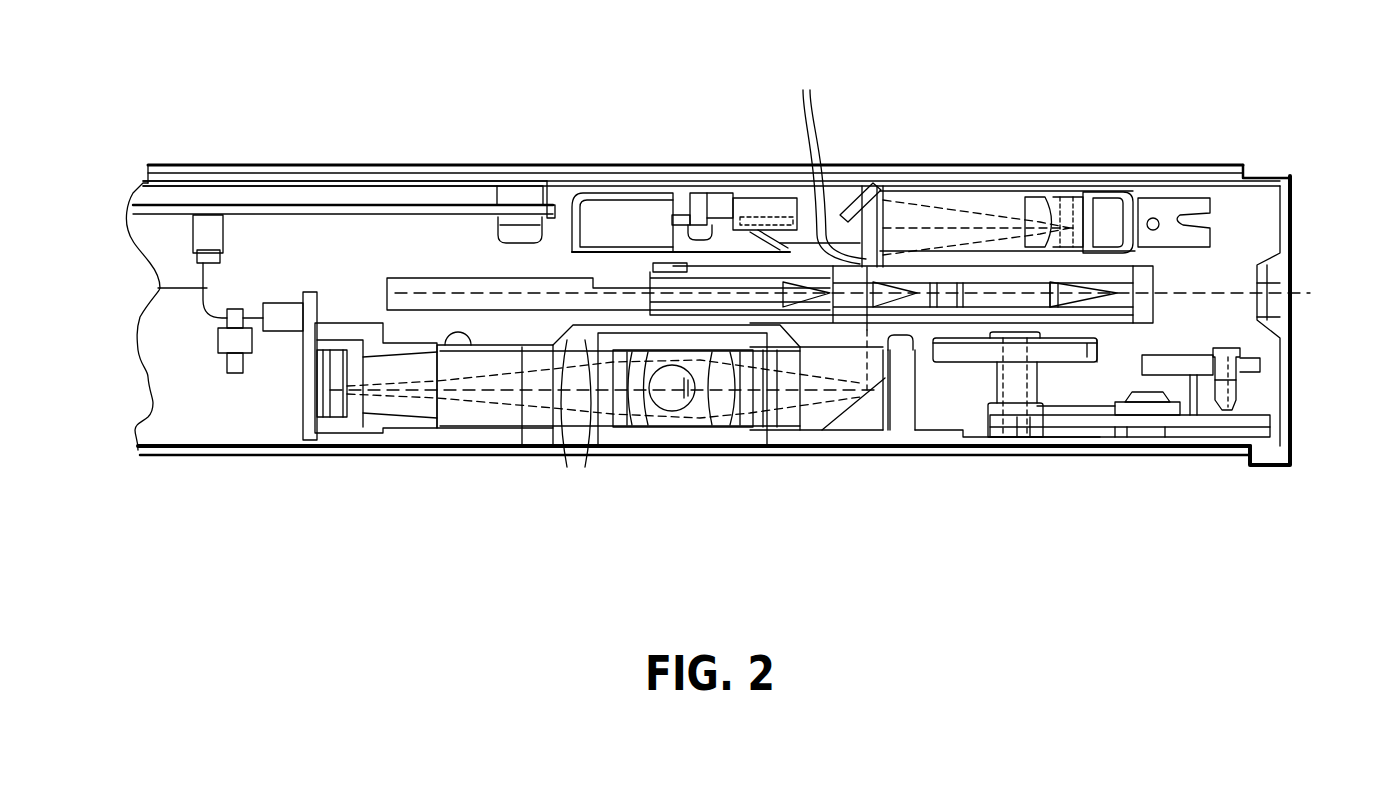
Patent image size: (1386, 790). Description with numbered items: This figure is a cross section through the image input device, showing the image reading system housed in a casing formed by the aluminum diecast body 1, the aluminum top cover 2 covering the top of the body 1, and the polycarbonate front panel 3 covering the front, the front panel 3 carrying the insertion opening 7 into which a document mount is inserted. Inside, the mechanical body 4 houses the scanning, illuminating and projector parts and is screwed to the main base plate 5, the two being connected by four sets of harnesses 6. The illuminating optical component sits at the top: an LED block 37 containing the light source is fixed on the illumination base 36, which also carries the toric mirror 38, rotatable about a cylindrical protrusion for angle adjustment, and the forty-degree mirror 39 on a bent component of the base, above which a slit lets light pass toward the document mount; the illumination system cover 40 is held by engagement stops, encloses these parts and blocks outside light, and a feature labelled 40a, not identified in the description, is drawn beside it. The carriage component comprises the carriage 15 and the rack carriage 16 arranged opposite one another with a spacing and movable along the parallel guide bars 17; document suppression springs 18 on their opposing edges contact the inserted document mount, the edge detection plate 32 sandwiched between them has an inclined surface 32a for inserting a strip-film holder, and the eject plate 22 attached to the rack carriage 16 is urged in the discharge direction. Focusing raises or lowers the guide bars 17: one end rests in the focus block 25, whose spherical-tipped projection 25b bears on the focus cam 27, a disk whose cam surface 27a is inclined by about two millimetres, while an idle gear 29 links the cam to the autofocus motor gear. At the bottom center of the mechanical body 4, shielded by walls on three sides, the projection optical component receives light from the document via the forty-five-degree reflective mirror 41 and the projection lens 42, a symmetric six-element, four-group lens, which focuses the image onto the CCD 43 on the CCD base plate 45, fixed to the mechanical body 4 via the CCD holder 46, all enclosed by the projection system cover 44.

The body 1 is at (820, 457).
The top cover 2 is at (621, 168).
The front panel 3 is at (1291, 358).
The mechanical body 4 is at (950, 446).
The main base plate 5 is at (282, 207).
The harnesses 6 is at (207, 289).
The insertion opening 7 is at (1290, 283).
The carriage 15 is at (970, 267).
The rack carriage 16 is at (1117, 316).
The guide bars 17 is at (1193, 418).
The document suppression springs 18 is at (831, 160).
The eject plate 22 is at (768, 447).
The focus block 25 is at (1236, 381).
The projection 25b is at (1232, 404).
The focus cam 27 is at (1122, 440).
The cam surface 27a is at (1193, 440).
The idle gear 29 is at (968, 352).
The edge detection plate 32 is at (685, 268).
The inclined surface 32a is at (800, 278).
The illumination base 36 is at (577, 187).
The LED block 37 is at (718, 190).
The toric mirror 38 is at (1068, 195).
The 40° mirror 39 is at (855, 195).
The illumination system cover 40 is at (1015, 245).
The beam splitter 40a is at (918, 267).
The 45° reflective mirror 41 is at (880, 436).
The projection lens 42 is at (648, 447).
The CCD 43 is at (348, 440).
The projection system cover 44 is at (568, 467).
The CCD base plate 45 is at (300, 438).
The CCD holder 46 is at (372, 435).